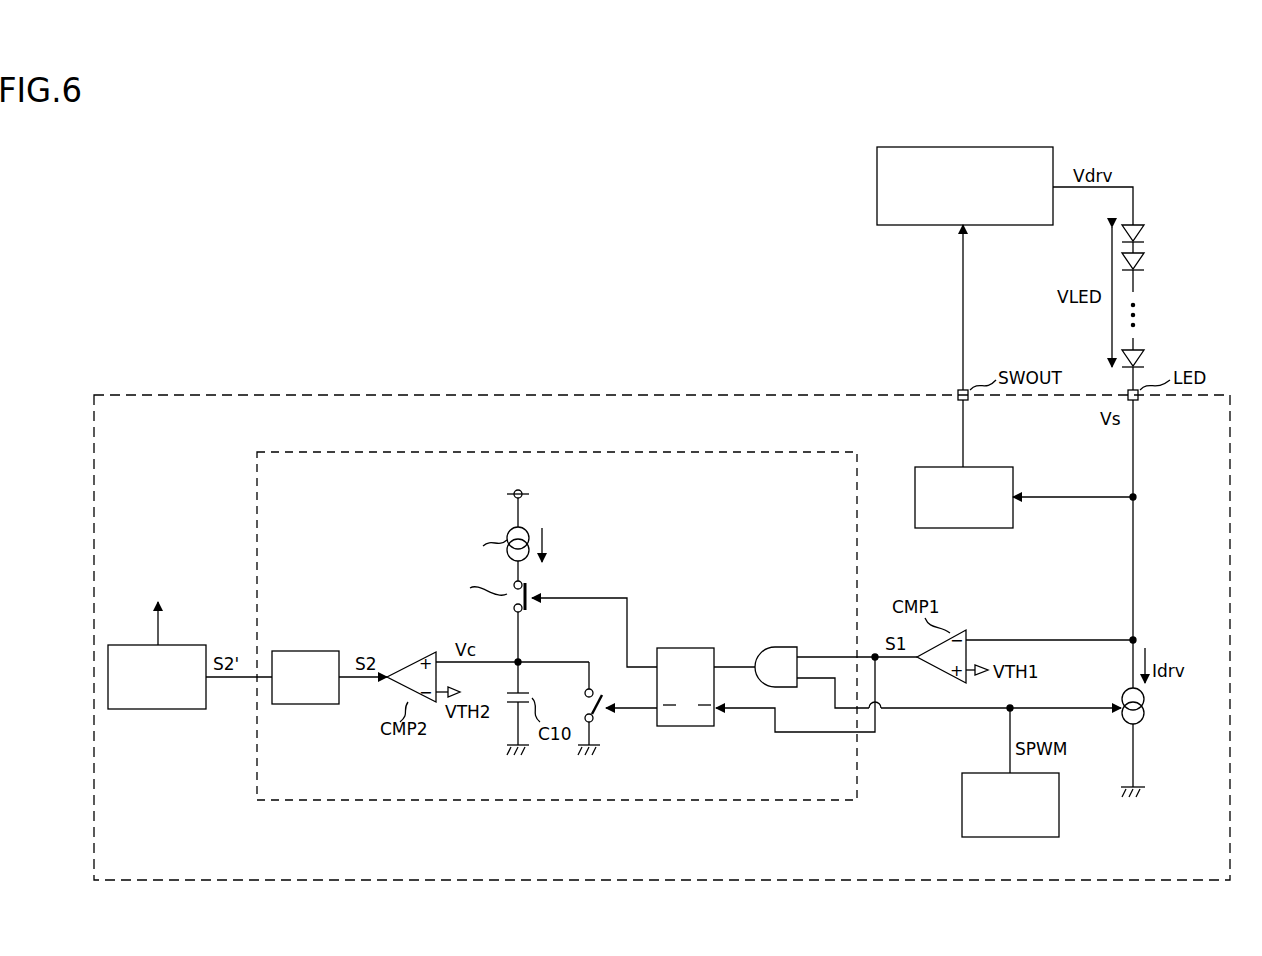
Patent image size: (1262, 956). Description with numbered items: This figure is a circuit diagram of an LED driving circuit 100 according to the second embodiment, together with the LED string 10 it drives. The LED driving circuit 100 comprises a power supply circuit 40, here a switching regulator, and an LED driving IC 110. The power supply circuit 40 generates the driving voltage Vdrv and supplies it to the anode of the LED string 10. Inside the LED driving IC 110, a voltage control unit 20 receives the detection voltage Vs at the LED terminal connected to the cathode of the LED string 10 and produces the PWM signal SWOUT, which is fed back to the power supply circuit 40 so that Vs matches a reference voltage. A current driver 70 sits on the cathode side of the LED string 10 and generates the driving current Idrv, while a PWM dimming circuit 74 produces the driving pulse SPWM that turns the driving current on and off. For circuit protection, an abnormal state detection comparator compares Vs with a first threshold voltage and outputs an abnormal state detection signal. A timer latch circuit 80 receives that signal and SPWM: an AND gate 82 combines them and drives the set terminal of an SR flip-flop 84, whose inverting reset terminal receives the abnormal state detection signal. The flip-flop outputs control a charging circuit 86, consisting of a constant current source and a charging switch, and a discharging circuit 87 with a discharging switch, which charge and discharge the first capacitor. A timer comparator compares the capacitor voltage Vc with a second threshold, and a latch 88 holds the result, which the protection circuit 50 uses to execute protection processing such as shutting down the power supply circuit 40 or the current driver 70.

The LED driving circuit 100 is at (597, 228).
The LED driving IC 110 is at (655, 395).
The timer latch circuit 80 is at (637, 800).
The power supply circuit 40 is at (877, 188).
The LED string 10 is at (1150, 245).
The voltage control unit 20 is at (968, 528).
The current driver 70 is at (1146, 712).
The PWM dimming circuit 74 is at (962, 800).
The SR flip-flop 84 is at (685, 648).
The AND gate 82 is at (780, 647).
The charging circuit 86 is at (425, 528).
The discharging circuit 87 is at (597, 720).
The latch 88 is at (305, 651).
The protection circuit 50 is at (165, 709).